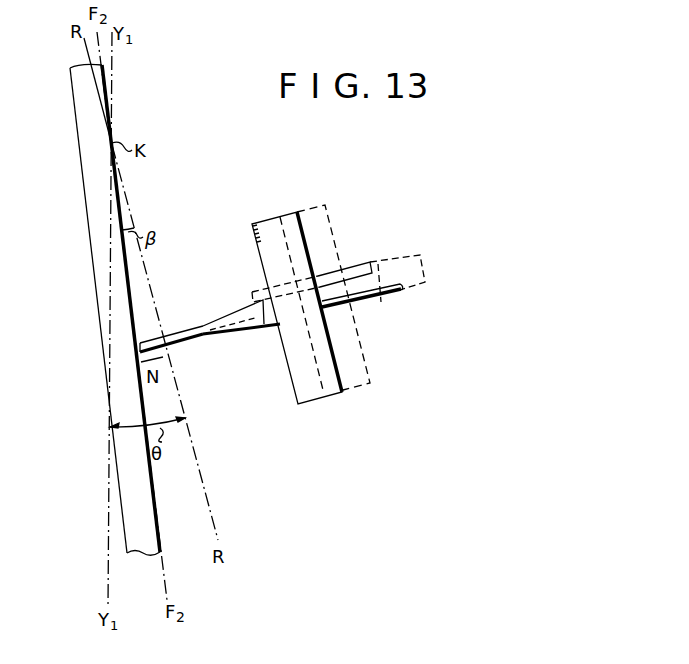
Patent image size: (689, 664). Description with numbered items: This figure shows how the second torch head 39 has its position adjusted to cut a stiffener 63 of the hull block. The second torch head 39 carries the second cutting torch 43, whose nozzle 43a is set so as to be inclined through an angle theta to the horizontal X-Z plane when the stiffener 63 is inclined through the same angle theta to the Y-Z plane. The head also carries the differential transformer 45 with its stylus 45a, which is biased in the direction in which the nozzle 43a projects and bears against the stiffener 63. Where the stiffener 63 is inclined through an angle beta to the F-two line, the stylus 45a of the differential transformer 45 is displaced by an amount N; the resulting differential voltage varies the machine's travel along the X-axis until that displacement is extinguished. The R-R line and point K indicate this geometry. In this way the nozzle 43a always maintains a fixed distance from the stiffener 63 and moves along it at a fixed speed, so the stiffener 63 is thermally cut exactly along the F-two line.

The stiffener 63 is at (82, 163).
The stylus 45a is at (153, 340).
The nozzle 43a is at (243, 332).
The second torch head 39 is at (315, 395).
The differential transformer 45 is at (350, 268).
The second cutting torch 43 is at (395, 297).